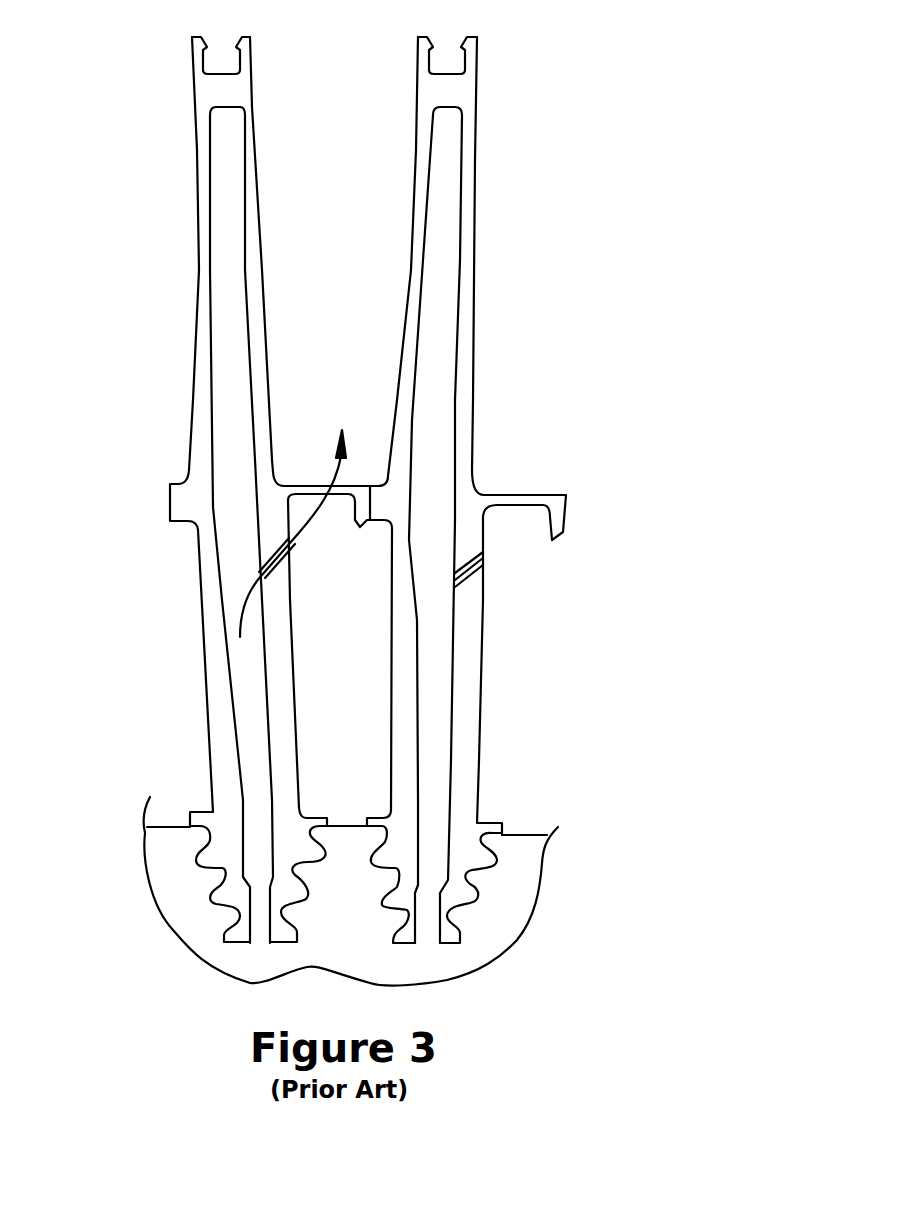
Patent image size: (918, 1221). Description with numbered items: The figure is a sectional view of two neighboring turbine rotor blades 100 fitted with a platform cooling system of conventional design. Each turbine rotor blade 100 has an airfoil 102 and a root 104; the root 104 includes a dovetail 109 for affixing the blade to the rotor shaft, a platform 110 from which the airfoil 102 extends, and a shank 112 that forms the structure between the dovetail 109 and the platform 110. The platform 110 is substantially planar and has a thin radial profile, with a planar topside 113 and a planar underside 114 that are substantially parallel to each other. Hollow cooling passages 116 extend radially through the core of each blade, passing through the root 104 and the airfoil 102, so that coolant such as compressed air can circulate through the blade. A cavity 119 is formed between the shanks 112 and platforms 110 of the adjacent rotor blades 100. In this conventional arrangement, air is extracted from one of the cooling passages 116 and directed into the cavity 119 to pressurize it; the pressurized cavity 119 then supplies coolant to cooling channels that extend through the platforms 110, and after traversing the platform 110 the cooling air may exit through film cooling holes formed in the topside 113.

The turbine rotor blade 100 is at (337, 491).
The airfoil 102 is at (195, 309).
The root 104 is at (585, 748).
The dovetail 109 is at (467, 900).
The platform 110 is at (330, 500).
The shank 112 is at (155, 701).
The topside 113 is at (345, 480).
The underside 114 is at (330, 500).
The cooling passage 116 is at (231, 546).
The cavity 119 is at (363, 660).